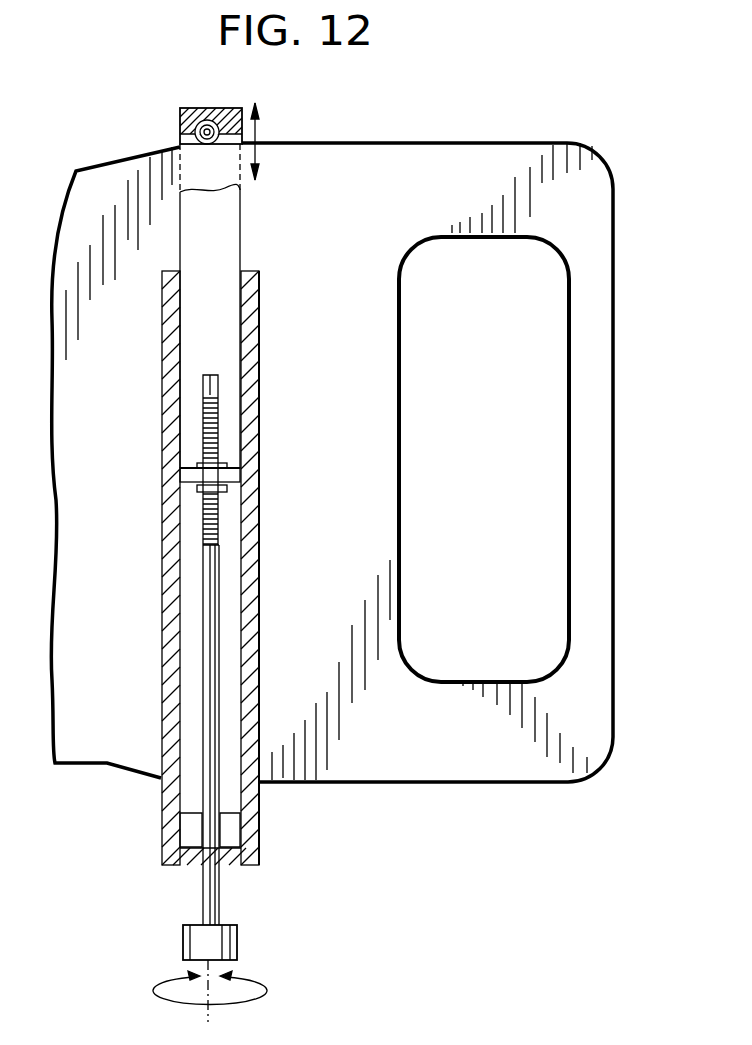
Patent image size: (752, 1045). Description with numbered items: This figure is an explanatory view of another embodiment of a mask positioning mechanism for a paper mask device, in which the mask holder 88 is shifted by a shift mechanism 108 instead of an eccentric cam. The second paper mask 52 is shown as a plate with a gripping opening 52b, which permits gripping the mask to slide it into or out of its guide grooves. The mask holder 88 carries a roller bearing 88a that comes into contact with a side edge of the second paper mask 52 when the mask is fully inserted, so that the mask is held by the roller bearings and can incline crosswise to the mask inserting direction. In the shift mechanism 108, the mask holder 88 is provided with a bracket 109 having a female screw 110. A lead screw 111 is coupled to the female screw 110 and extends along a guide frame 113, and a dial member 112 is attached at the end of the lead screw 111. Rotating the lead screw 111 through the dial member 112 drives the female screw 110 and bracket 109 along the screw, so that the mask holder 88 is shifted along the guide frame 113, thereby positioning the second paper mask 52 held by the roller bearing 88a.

The second paper mask 52 is at (410, 158).
The gripping opening 52b is at (566, 386).
The mask holder 88 is at (180, 108).
The roller bearing 88a is at (180, 140).
The shift mechanism 108 is at (362, 858).
The bracket 109 is at (183, 475).
The female screw 110 is at (223, 490).
The lead screw 111 is at (217, 392).
The dial member 112 is at (237, 940).
The guide frame 113 is at (259, 312).